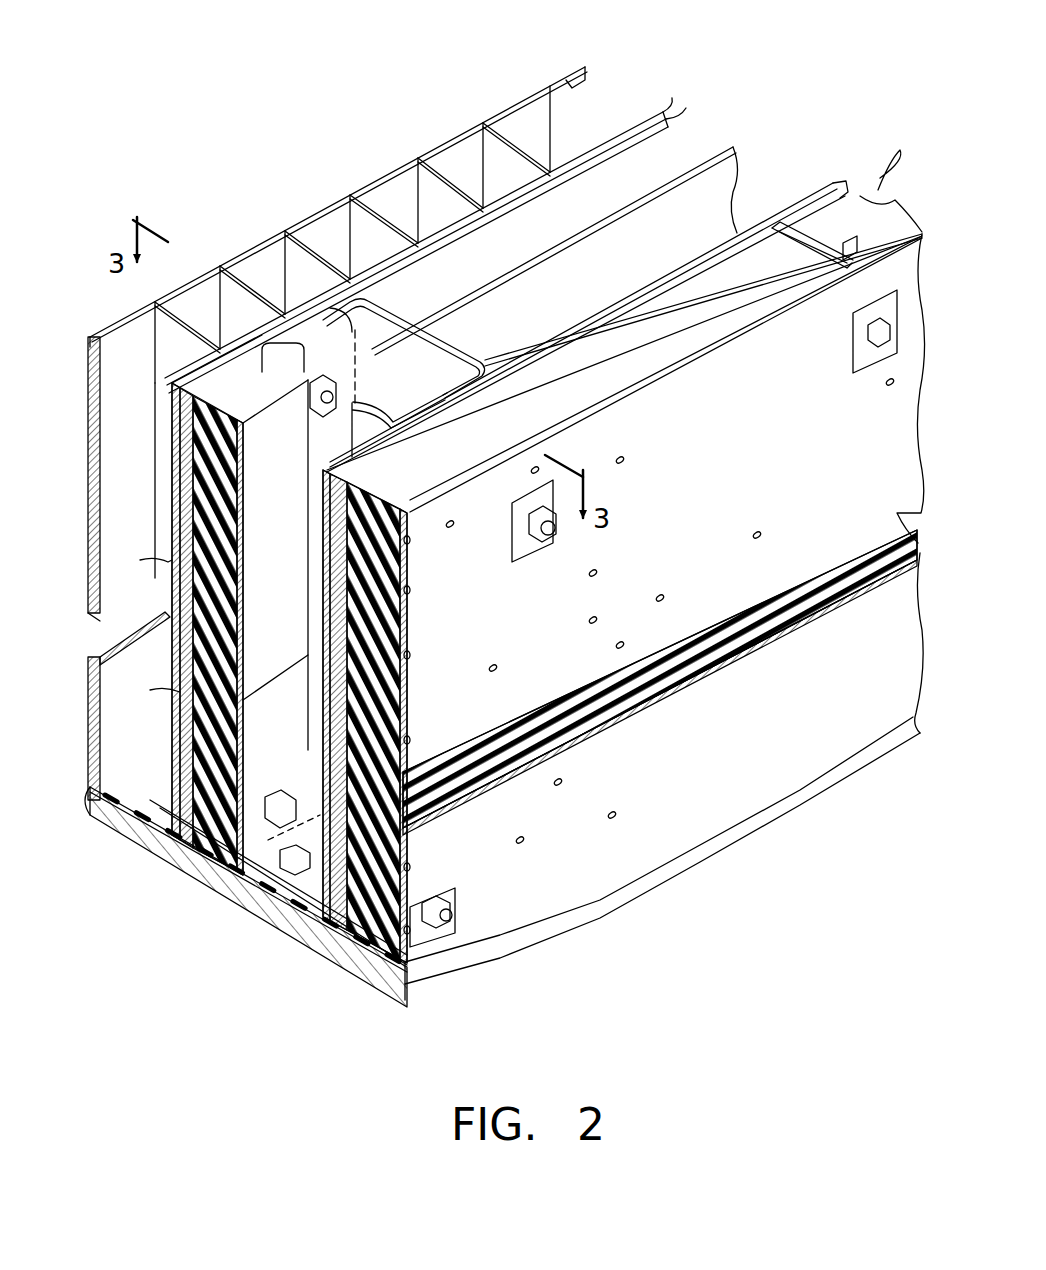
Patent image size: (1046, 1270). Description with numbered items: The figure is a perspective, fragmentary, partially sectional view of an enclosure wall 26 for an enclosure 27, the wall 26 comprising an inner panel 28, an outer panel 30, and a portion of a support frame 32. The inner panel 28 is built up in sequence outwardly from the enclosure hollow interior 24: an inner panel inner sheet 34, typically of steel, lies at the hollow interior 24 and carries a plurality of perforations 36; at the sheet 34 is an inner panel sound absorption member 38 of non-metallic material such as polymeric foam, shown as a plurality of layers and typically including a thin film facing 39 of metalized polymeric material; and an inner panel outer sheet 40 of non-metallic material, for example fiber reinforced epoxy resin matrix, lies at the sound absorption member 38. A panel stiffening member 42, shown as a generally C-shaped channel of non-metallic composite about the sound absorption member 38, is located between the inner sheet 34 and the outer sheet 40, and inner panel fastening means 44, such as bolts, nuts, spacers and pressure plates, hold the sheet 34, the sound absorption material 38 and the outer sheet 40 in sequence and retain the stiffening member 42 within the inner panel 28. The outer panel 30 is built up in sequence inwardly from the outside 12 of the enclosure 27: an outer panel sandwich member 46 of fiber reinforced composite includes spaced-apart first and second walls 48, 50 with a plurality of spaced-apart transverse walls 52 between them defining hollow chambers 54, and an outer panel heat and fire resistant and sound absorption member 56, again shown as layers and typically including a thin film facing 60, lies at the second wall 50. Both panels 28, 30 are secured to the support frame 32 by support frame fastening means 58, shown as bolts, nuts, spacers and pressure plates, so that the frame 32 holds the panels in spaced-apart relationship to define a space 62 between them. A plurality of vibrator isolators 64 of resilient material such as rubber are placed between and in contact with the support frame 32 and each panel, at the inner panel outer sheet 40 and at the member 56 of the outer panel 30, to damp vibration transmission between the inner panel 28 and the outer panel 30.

The outside 12 is at (214, 160).
The enclosure hollow interior 24 is at (631, 953).
The enclosure wall 26 is at (822, 48).
The enclosure 27 is at (178, 968).
The inner panel 28 is at (912, 152).
The outer panel 30 is at (668, 62).
The support frame 32 is at (438, 342).
The inner panel inner sheet 34 is at (408, 772).
The perforations 36 is at (408, 593).
The inner panel sound absorption member 38 is at (895, 160).
The thin film facing 39 is at (930, 240).
The inner panel outer sheet 40 is at (718, 246).
The panel stiffening member 42 is at (810, 258).
The inner panel fastening means 44 is at (862, 343).
The outer panel sandwich member 46 is at (398, 150).
The sandwich member first wall 48 is at (145, 330).
The sandwich member second wall 50 is at (340, 282).
The transverse walls 52 is at (592, 104).
The sandwich member hollow chambers 54 is at (534, 122).
The outer panel heat and fire resistant and sound absorption member 56 is at (680, 120).
The support frame fastening means 58 is at (338, 378).
The thin film facing 60 is at (733, 146).
The space 62 is at (636, 277).
The vibrator isolators 64 is at (350, 340).